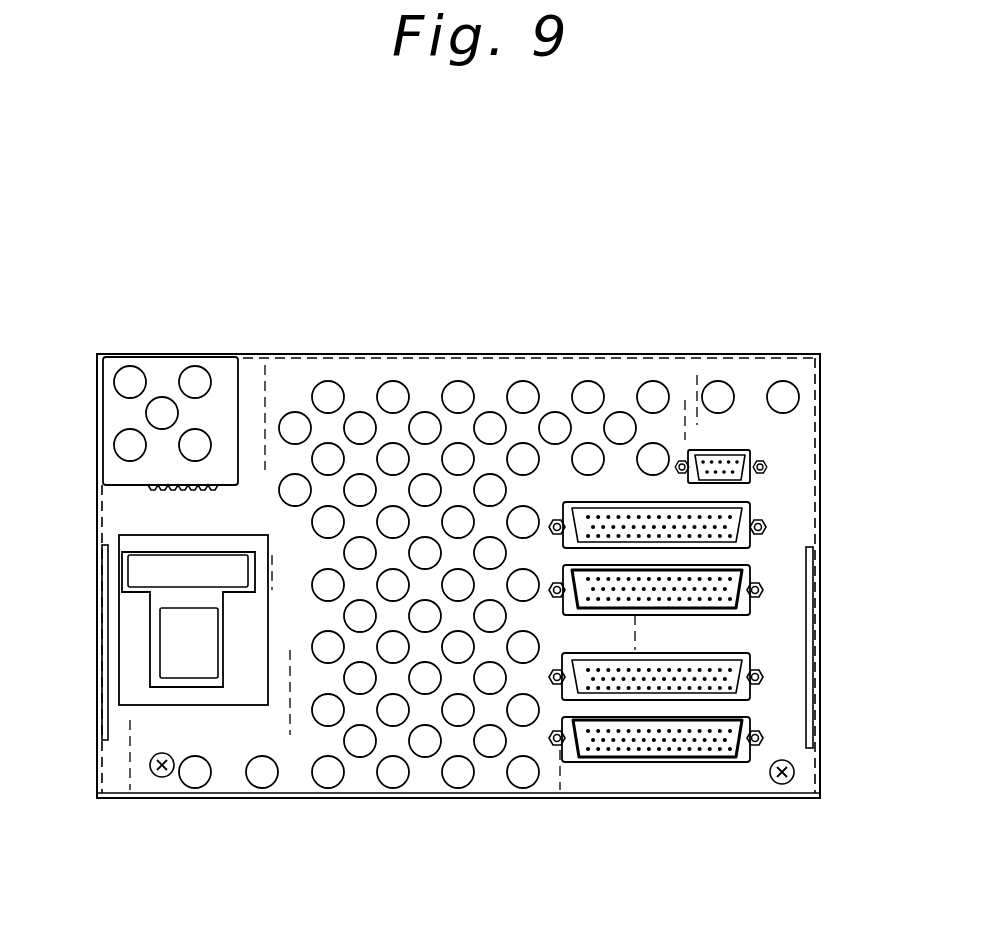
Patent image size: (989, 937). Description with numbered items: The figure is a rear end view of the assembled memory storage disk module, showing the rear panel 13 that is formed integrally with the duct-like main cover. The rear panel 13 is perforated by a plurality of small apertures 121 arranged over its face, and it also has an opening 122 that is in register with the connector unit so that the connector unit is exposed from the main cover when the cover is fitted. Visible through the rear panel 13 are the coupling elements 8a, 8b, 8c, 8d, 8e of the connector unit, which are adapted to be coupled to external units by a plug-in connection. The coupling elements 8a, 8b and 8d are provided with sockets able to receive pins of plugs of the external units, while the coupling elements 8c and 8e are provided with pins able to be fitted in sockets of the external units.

The rear panel 13 is at (630, 367).
The small apertures 121 is at (658, 395).
The opening 122 is at (150, 570).
The coupling element 8a is at (750, 448).
The coupling element 8b is at (745, 502).
The coupling element 8c is at (748, 565).
The coupling element 8d is at (745, 653).
The coupling element 8e is at (745, 717).